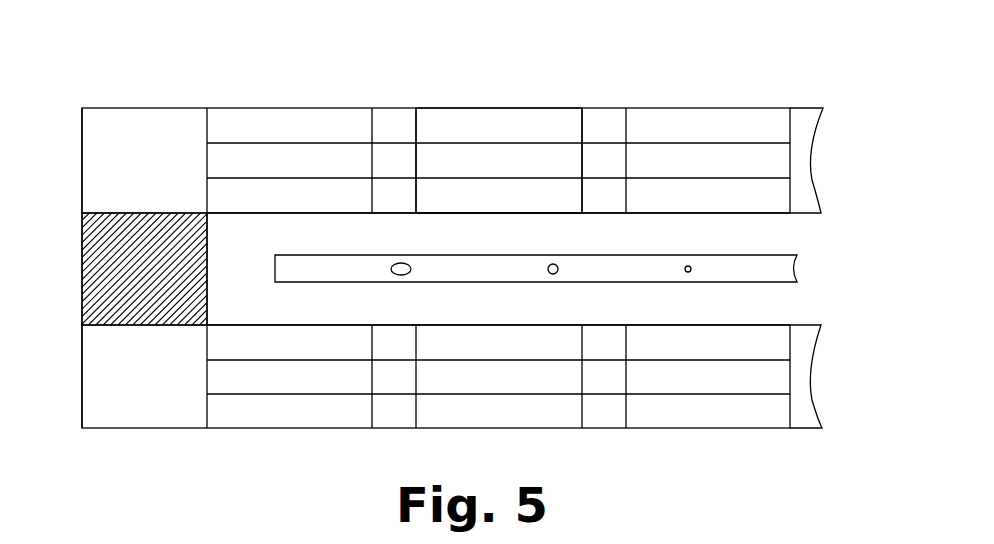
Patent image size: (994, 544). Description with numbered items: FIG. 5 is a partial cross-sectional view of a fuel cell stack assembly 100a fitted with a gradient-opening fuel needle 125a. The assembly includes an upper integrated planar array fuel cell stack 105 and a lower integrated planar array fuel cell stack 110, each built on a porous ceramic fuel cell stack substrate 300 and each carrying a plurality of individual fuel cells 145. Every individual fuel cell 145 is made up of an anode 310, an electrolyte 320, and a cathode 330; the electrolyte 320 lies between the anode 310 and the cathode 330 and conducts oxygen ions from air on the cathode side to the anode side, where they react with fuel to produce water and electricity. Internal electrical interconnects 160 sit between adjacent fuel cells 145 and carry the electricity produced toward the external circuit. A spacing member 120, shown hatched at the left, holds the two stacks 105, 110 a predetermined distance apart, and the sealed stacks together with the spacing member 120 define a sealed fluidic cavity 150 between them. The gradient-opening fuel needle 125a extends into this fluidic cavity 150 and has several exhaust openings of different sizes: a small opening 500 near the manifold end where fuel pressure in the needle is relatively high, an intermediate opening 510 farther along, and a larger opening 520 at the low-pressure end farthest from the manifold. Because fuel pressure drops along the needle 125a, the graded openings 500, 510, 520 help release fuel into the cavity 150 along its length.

The fuel cell stack assembly 100a is at (342, 56).
The lower integrated planar array fuel cell stack 110 is at (211, 94).
The upper integrated planar array fuel cell stack 105 is at (170, 448).
The porous ceramic fuel cell stack substrate 300 is at (126, 171).
The internal electrical interconnects 160 is at (378, 136).
The individual fuel cell 145 is at (501, 102).
The cathode 330 is at (777, 132).
The electrolyte 320 is at (790, 160).
The anode 310 is at (777, 195).
The spacing member 120 is at (97, 238).
The sealed fluidic cavity 150 is at (782, 307).
The gradient-opening fuel needle 125a is at (782, 270).
The larger opening 520 is at (401, 275).
The intermediate opening 510 is at (553, 274).
The small opening 500 is at (688, 272).